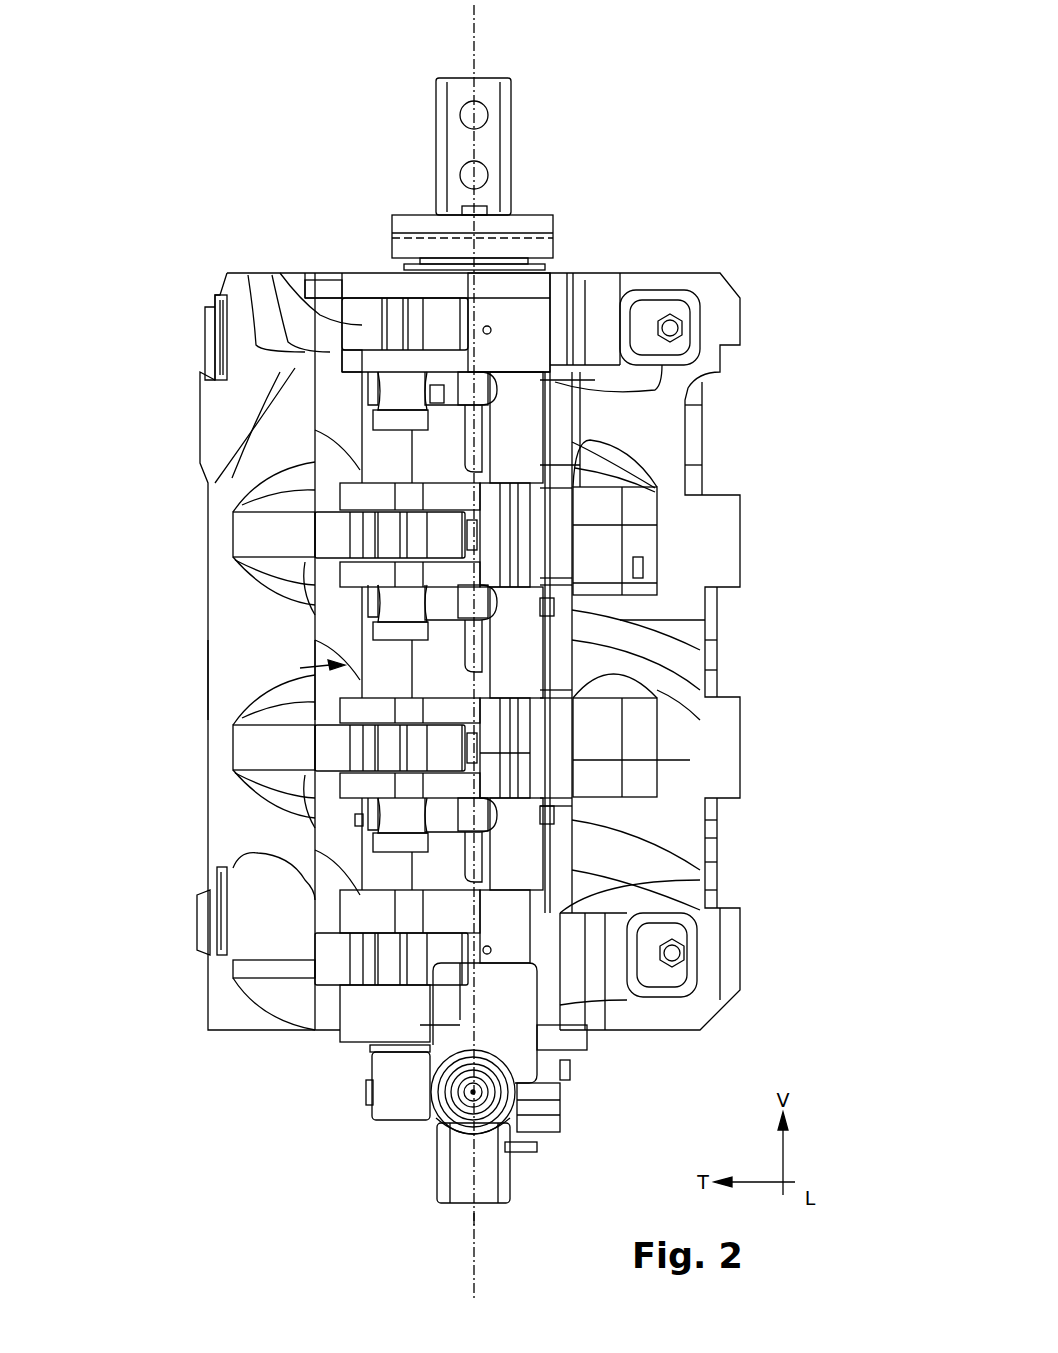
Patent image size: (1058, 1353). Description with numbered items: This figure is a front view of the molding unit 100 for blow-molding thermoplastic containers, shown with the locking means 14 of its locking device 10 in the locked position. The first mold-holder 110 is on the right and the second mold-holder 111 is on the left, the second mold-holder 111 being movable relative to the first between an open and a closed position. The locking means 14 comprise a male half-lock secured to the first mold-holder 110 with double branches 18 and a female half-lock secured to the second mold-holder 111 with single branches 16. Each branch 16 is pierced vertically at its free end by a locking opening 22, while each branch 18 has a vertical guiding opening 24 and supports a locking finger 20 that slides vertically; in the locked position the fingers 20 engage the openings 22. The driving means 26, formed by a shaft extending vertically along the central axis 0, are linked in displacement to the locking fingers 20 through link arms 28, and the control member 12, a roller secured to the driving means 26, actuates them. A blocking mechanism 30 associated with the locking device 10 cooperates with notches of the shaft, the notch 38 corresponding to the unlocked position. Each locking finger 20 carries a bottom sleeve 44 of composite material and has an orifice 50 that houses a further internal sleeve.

The axis of rotation 0 is at (478, 30).
The molding unit 100 is at (708, 238).
The locking device 10 is at (695, 782).
The control member 12 is at (512, 1098).
The locking means 14 is at (255, 672).
The single branches 16 is at (370, 320).
The double branches 18 is at (355, 287).
The locking finger 20 is at (362, 427).
The locking opening 22 is at (443, 360).
The guiding opening 24 is at (358, 258).
The driving means 26 is at (667, 690).
The link arm 28 is at (545, 406).
The blocking mechanism 30 is at (612, 538).
The notch 38 is at (545, 449).
The bottom sleeve 44 is at (362, 467).
The orifice 50 is at (660, 560).
The first mold-holder 110 is at (667, 637).
The second mold-holder 111 is at (220, 672).